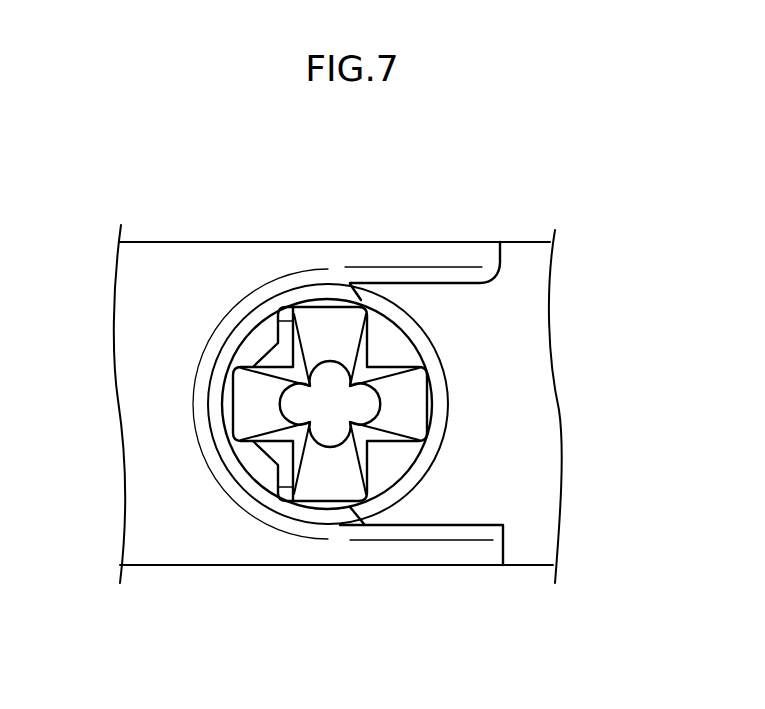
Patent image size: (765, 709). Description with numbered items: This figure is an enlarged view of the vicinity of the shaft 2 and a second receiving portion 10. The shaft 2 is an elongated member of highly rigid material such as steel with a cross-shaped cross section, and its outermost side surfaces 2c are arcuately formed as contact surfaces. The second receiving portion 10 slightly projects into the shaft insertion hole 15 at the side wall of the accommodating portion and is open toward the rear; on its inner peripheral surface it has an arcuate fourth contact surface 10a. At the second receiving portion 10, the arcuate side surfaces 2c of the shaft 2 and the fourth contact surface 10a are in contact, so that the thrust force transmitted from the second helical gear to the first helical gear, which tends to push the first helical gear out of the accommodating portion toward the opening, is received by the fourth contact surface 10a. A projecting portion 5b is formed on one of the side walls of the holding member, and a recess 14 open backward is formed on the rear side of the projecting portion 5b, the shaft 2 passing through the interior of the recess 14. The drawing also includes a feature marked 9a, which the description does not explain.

The shaft 2 is at (328, 403).
The outermost side surfaces 2c is at (226, 384).
The projecting portion 5b is at (441, 548).
The engaging portion of ring 9a is at (422, 468).
The second receiving portion 10 is at (233, 337).
The fourth contact surface 10a is at (244, 336).
The recess 14 is at (243, 489).
The shaft insertion hole 15 is at (442, 357).